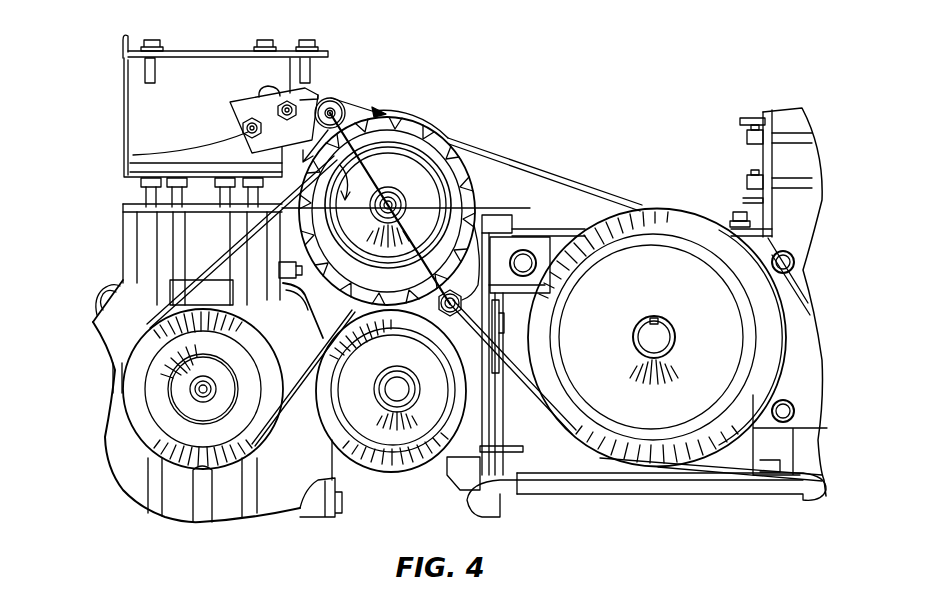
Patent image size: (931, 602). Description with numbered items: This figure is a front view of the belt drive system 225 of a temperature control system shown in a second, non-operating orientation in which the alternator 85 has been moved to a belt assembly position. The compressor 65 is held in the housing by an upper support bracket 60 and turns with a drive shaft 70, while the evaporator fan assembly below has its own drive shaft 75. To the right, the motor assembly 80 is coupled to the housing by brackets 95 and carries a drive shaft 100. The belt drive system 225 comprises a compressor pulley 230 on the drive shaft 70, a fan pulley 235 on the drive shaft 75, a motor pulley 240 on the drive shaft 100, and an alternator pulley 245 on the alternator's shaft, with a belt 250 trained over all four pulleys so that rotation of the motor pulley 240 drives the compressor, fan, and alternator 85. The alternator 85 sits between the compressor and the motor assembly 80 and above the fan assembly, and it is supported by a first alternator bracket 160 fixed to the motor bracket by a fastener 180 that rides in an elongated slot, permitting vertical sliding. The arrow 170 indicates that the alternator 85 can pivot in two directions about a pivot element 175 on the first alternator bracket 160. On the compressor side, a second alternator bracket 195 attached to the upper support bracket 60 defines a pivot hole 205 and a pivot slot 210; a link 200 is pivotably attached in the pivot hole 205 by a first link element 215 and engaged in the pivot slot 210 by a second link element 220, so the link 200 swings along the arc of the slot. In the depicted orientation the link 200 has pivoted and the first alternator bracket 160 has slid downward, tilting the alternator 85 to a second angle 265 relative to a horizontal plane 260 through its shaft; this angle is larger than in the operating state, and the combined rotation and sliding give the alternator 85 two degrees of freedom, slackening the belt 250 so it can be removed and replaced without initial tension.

The upper support bracket 60 is at (215, 51).
The compressor 65 is at (105, 292).
The drive shaft 70 is at (195, 401).
The drive shaft 75 is at (418, 392).
The motor assembly 80 is at (728, 131).
The alternator 85 is at (396, 182).
The brackets 95 is at (722, 487).
The drive shaft 100 is at (658, 337).
The first alternator bracket 160 is at (545, 285).
The arrow 170 is at (355, 107).
The pivot element 175 is at (445, 312).
The fastener 180 is at (505, 320).
The second alternator bracket 195 is at (145, 103).
The link 200 is at (240, 108).
The pivot hole 205 is at (241, 118).
The pivot slot 210 is at (262, 92).
The first link element 215 is at (133, 155).
The second link element 220 is at (298, 106).
The belt drive system 225 is at (588, 132).
The compressor pulley 230 is at (170, 389).
The fan pulley 235 is at (391, 413).
The motor pulley 240 is at (657, 378).
The alternator pulley 245 is at (400, 165).
The belt 250 is at (596, 190).
The horizontal plane 260 is at (490, 210).
The second angle 265 is at (160, 220).